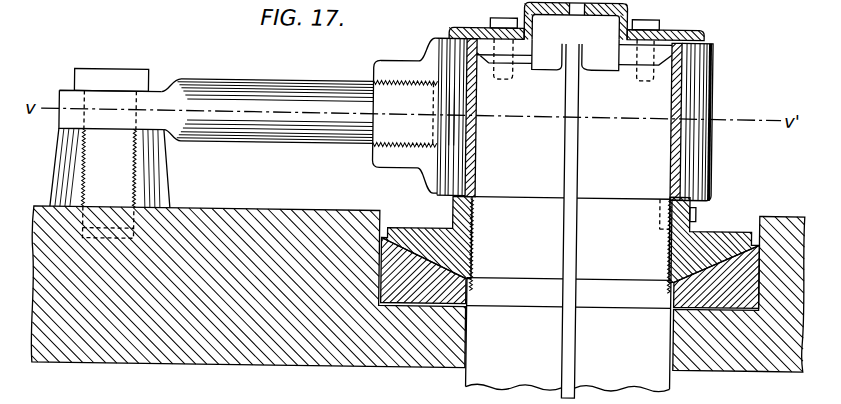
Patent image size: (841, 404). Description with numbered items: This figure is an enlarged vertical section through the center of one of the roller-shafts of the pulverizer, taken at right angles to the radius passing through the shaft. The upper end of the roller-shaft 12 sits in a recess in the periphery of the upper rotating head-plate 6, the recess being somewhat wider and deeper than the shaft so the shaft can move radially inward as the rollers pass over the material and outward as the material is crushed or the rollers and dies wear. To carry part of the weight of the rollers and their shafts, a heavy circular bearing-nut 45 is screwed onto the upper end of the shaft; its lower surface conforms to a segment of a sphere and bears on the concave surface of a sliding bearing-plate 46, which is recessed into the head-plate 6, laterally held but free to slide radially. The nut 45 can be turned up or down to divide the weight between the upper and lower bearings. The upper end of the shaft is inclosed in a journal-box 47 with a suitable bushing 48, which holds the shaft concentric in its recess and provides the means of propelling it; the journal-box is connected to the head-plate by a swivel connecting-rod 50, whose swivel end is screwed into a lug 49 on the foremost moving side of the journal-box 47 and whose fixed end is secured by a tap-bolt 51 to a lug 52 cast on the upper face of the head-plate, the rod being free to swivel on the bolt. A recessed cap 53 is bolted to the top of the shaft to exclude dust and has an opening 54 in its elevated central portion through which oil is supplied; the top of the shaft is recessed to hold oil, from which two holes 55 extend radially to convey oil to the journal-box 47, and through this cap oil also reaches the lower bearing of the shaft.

The upper rotating head-plate 6 is at (183, 368).
The roller-shaft 12 is at (569, 294).
The circular bearing-nut 45 is at (417, 228).
The sliding bearing-plate 46 is at (412, 297).
The journal-box 47 is at (711, 100).
The bushing 48 is at (681, 134).
The lug 49 is at (401, 60).
The swivel connecting-rod 50 is at (252, 84).
The tap-bolt 51 is at (103, 81).
The lug 52 is at (165, 179).
The recessed cap 53 is at (464, 27).
The opening 54 is at (576, 36).
The oil hole 55 is at (465, 40).